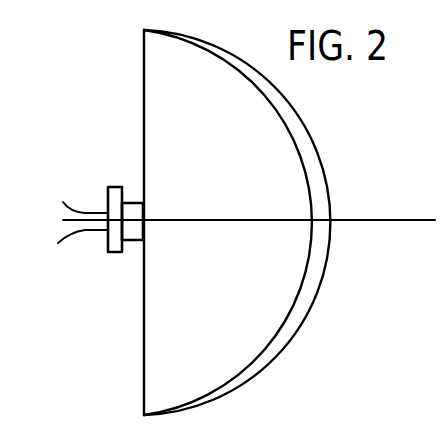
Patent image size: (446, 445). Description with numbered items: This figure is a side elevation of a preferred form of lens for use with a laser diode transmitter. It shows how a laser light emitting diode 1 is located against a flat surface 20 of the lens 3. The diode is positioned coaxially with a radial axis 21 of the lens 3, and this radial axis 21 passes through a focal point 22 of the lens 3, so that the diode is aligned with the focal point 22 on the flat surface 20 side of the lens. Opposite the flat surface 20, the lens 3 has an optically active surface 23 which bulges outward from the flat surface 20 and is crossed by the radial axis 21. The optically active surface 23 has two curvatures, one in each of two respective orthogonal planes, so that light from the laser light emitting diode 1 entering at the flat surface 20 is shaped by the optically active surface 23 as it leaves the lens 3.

The laser light emitting diode 1 is at (113, 247).
The lens 3 is at (141, 106).
The flat surface 20 is at (142, 327).
The radial axis 21 is at (368, 219).
The focal point 22 is at (147, 214).
The optically active surface 23 is at (293, 315).